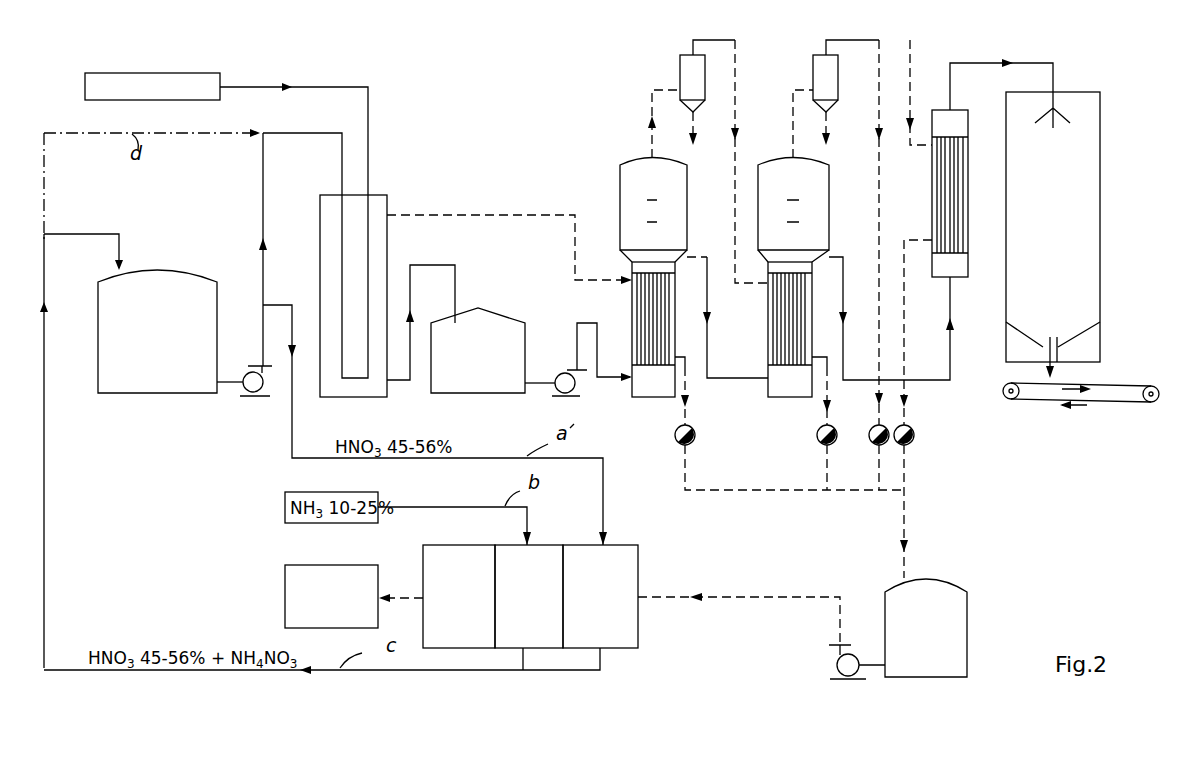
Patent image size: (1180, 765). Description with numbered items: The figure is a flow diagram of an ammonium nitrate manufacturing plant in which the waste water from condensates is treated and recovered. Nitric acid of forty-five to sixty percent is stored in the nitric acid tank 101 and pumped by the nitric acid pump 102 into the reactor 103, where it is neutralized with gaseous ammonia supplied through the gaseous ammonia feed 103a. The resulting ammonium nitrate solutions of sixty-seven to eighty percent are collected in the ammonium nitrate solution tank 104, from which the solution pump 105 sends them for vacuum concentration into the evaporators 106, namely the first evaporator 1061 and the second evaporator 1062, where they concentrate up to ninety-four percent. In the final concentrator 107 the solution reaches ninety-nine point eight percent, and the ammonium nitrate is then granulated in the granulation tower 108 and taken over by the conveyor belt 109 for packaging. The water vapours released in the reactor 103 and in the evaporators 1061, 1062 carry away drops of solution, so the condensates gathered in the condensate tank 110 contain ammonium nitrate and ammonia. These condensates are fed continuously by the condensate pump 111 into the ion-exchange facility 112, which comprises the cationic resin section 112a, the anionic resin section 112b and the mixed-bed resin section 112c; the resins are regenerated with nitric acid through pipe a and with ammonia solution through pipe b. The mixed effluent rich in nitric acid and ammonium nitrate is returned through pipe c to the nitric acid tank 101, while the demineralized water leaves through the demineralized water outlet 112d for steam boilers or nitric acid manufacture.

The nitric acid tank 101 is at (147, 393).
The nitric acid pump 102 is at (256, 393).
The reactor 103 is at (320, 265).
The gaseous ammonia feed 103a is at (148, 72).
The ammonium nitrate solution tank 104 is at (452, 388).
The solution pump 105 is at (572, 390).
The evaporators 106 is at (765, 265).
The first evaporator 1061 is at (630, 183).
The second evaporator 1062 is at (777, 172).
The final concentrator 107 is at (940, 206).
The granulation tower 108 is at (1090, 213).
The conveyor belt 109 is at (1130, 390).
The condensate tank 110 is at (934, 672).
The condensate pump 111 is at (836, 664).
The ion-exchange facility 112 is at (369, 621).
The cationic resin section 112a is at (608, 638).
The anionic resin section 112b is at (527, 638).
The mixed-bed resin section 112c is at (462, 638).
The demineralized water outlet 112d is at (285, 585).